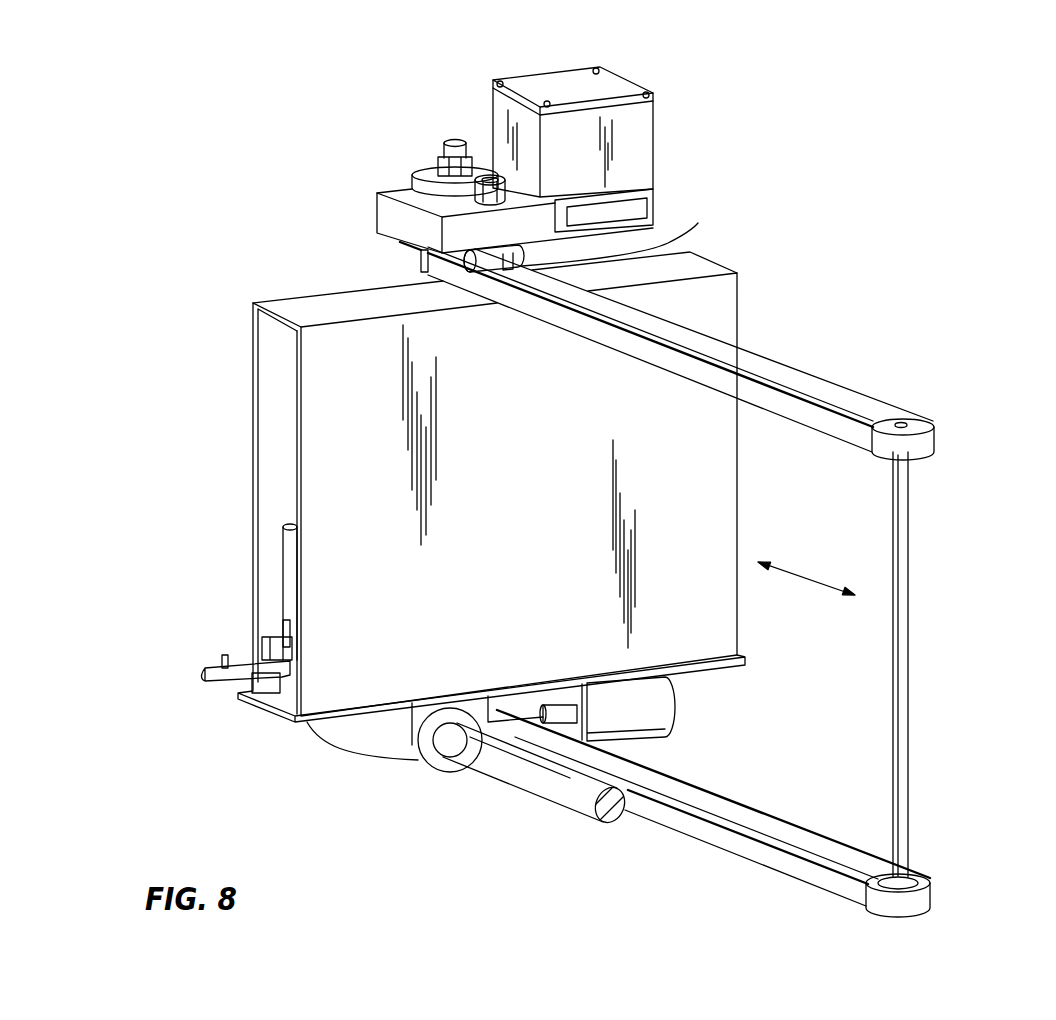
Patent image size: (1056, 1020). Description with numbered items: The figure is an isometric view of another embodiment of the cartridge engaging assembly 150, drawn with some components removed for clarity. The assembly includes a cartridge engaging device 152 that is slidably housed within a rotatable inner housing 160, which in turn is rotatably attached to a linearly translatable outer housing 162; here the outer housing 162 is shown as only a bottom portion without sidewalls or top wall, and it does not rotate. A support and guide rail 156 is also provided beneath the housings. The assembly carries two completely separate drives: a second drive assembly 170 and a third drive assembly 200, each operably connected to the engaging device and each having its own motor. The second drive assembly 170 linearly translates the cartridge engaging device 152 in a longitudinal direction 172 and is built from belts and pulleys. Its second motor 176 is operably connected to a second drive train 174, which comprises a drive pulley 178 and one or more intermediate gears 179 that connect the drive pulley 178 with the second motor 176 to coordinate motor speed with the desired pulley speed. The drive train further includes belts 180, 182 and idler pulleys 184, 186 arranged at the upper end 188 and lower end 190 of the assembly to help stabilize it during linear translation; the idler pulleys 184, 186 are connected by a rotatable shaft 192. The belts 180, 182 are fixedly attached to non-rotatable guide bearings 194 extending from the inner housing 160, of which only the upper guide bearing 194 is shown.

The cartridge engaging assembly 150 is at (228, 245).
The cartridge engaging device 152 is at (236, 572).
The support and guide rail 156 is at (516, 796).
The inner housing 160 is at (249, 482).
The outer housing 162 is at (265, 712).
The second drive assembly 170 is at (385, 152).
The longitudinal direction 172 is at (813, 568).
The second drive train 174 is at (455, 181).
The second motor 176 is at (655, 140).
The drive pulley 178 is at (408, 263).
The intermediate gears 179 is at (447, 125).
The belt 180 is at (836, 372).
The belt 182 is at (826, 830).
The idler pulley 184 is at (923, 418).
The idler pulley 186 is at (922, 875).
The upper end 188 is at (978, 442).
The lower end 190 is at (968, 893).
The rotatable shaft 192 is at (910, 668).
The guide bearing 194 is at (620, 229).
The third drive assembly 200 is at (705, 711).